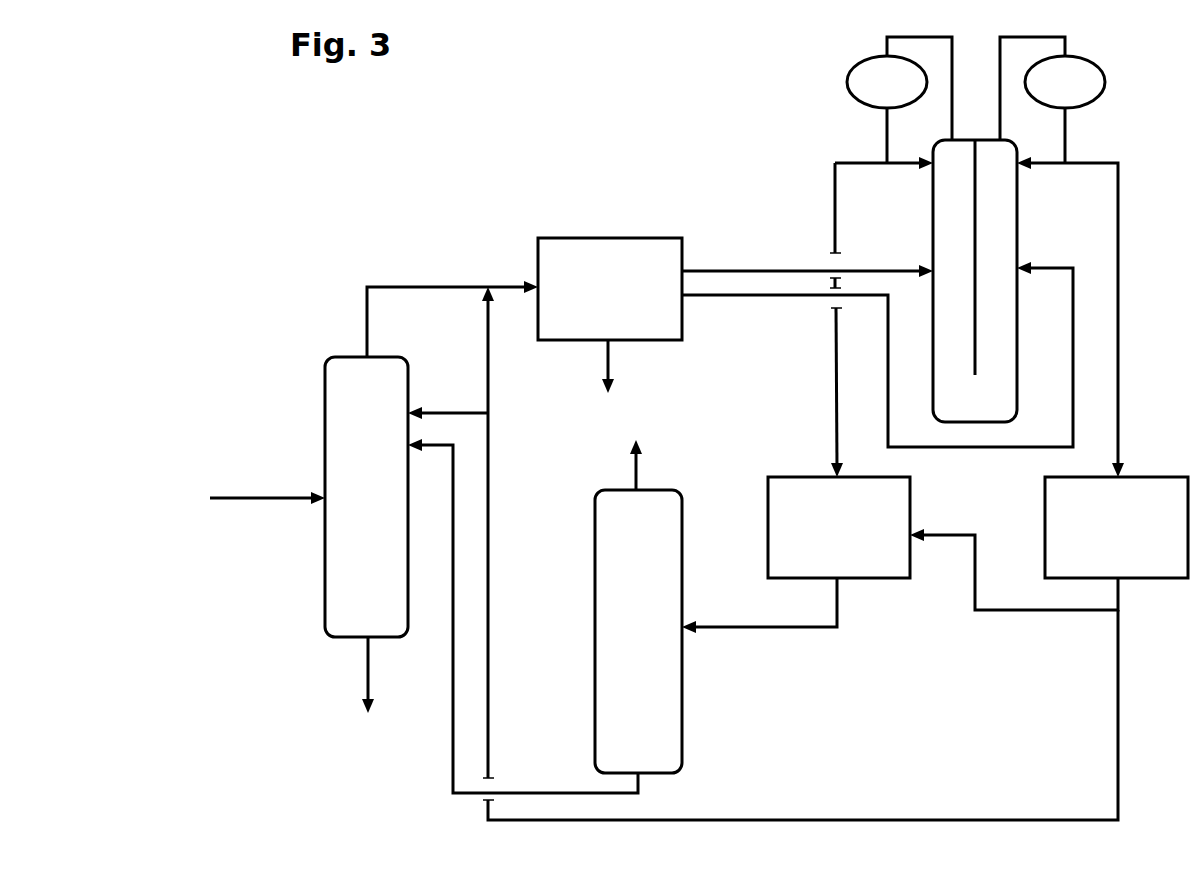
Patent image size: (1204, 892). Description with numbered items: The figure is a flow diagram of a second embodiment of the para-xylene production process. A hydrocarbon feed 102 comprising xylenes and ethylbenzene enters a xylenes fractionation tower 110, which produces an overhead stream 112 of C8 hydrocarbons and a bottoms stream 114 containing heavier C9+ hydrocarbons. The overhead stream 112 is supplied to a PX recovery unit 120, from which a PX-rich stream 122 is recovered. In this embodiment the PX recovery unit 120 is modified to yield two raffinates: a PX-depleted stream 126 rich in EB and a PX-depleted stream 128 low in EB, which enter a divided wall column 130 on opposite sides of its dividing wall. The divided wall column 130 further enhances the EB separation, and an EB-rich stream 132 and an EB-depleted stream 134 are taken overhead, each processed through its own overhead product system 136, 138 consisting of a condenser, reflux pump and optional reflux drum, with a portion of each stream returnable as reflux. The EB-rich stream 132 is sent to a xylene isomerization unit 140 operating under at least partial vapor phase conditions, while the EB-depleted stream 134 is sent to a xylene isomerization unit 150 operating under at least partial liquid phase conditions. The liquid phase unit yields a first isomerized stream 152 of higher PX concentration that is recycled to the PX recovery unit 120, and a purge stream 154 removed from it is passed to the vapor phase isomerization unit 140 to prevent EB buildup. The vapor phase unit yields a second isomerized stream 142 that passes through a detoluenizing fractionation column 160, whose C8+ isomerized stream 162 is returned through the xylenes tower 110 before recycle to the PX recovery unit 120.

The hydrocarbon feed 102 is at (267, 483).
The xylenes fractionation tower 110 is at (366, 497).
The overhead stream 112 is at (434, 319).
The bottoms stream 114 is at (353, 675).
The PX recovery unit 120 is at (610, 289).
The PX-rich stream 122 is at (590, 366).
The PX-depleted stream rich in EB 126 is at (807, 259).
The PX-depleted stream low in EB 128 is at (877, 354).
The divided wall column 130 is at (975, 281).
The EB-rich stream 132 is at (865, 317).
The EB-depleted stream 134 is at (1090, 317).
The overhead product system 136 is at (899, 100).
The overhead product system 138 is at (1052, 100).
The xylene isomerization unit 140 is at (839, 527).
The second isomerized stream 142 is at (759, 605).
The xylene isomerization unit 150 is at (1116, 527).
The first isomerized stream 152 is at (786, 553).
The purge stream 154 is at (1014, 569).
The detoluenizing fractionation column 160 is at (638, 606).
The C8+ isomerized stream 162 is at (523, 616).